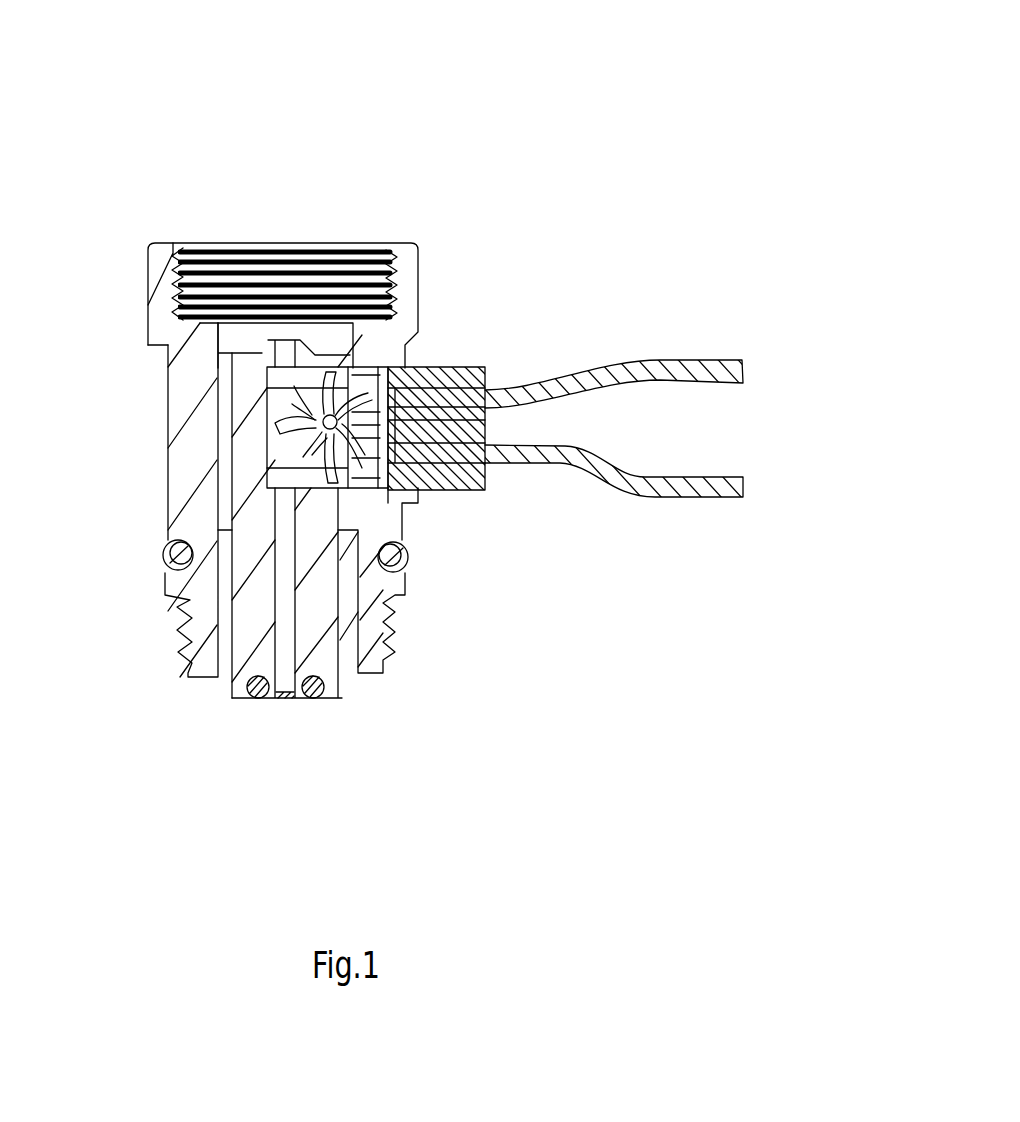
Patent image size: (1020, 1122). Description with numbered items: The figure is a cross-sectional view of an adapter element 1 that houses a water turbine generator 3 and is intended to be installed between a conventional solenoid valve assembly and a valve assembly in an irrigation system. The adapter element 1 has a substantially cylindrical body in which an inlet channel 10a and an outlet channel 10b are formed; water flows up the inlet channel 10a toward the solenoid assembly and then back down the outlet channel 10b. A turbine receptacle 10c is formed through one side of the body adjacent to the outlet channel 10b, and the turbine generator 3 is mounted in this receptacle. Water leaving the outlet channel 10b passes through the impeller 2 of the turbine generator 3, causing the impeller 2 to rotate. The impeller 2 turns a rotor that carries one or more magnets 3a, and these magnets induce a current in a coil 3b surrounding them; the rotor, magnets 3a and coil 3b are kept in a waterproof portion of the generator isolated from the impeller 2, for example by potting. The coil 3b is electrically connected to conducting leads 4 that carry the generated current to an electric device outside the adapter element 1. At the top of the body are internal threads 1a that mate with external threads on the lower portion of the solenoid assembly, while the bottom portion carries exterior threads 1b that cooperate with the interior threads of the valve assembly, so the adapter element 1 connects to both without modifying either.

The adapter element 1 is at (425, 243).
The internal threads 1a is at (390, 273).
The exterior threads 1b is at (388, 640).
The impeller 2 is at (350, 450).
The water turbine generator 3 is at (488, 492).
The magnets 3a is at (450, 420).
The coil 3b is at (443, 373).
The conducting leads 4 is at (744, 380).
The inlet channel 10a is at (223, 487).
The outlet channel 10b is at (359, 642).
The turbine receptacle 10c is at (412, 366).